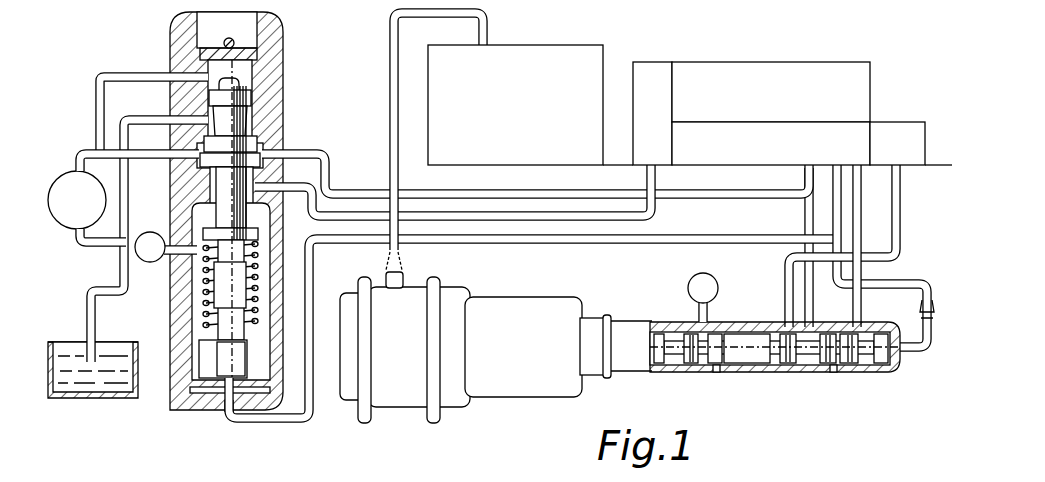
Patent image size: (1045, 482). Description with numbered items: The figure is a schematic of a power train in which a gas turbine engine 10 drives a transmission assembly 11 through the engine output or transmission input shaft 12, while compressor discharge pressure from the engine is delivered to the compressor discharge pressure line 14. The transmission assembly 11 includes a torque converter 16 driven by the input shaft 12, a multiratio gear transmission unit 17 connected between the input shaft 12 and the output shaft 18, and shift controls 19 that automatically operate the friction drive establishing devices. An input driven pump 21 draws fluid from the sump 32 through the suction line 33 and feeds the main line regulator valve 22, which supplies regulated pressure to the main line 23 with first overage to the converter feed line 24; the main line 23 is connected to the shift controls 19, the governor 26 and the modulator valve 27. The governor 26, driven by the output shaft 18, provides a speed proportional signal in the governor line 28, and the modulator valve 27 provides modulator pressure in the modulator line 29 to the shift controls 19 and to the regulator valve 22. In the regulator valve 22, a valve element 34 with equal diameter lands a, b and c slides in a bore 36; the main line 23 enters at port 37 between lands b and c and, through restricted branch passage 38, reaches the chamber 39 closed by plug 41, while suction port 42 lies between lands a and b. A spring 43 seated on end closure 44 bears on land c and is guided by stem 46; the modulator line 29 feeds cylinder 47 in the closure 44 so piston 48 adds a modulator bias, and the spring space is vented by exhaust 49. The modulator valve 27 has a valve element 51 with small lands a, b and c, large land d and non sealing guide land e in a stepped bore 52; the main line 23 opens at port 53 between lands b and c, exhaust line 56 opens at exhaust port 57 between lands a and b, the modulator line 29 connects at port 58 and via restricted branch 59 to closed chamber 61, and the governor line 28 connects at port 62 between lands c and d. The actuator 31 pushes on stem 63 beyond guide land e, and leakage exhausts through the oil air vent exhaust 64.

The gas turbine engine 10 is at (506, 62).
The transmission assembly 11 is at (733, 64).
The transmission input shaft 12 is at (614, 167).
The compressor discharge pressure line 14 is at (486, 27).
The torque converter 16 is at (645, 74).
The multiratio gear transmission unit 17 is at (801, 71).
The output shaft 18 is at (948, 167).
The shift controls 19 is at (862, 125).
The input driven pump 21 is at (60, 191).
The main line regulator valve 22 is at (178, 413).
The main line 23 is at (88, 152).
The converter feed line 24 is at (458, 218).
The governor 26 is at (883, 127).
The modulator valve 27 is at (815, 408).
The governor line 28 is at (900, 229).
The modulator line 29 is at (246, 424).
The modulator force actuator 31 is at (504, 405).
The sump 32 is at (76, 345).
The suction line 33 is at (78, 244).
The valve element 34 is at (257, 122).
The bore 36 is at (210, 177).
The port 37 is at (200, 162).
The restricted branch passage 38 is at (96, 93).
The chamber 39 is at (205, 71).
The plug 41 is at (257, 56).
The suction port 42 is at (200, 112).
The spring 43 is at (200, 288).
The end closure 44 is at (200, 352).
The stem 46 is at (222, 283).
The cylinder 47 is at (221, 385).
The piston 48 is at (217, 354).
The exhaust 49 is at (135, 252).
The valve element 51 is at (870, 346).
The stepped bore 52 is at (786, 338).
The main line port 53 is at (826, 362).
The exhaust line 56 is at (862, 281).
The exhaust port 57 is at (856, 328).
The modulator port 58 is at (836, 362).
The modulator restricted branch 59 is at (921, 351).
The closed chamber 61 is at (893, 364).
The port 62 is at (795, 352).
The stem 63 is at (703, 362).
The oil air vent exhaust 64 is at (690, 283).
The land a is at (262, 80).
The land b is at (262, 147).
The land c is at (795, 419).
The large land d is at (781, 354).
The non sealing guide land e is at (728, 360).